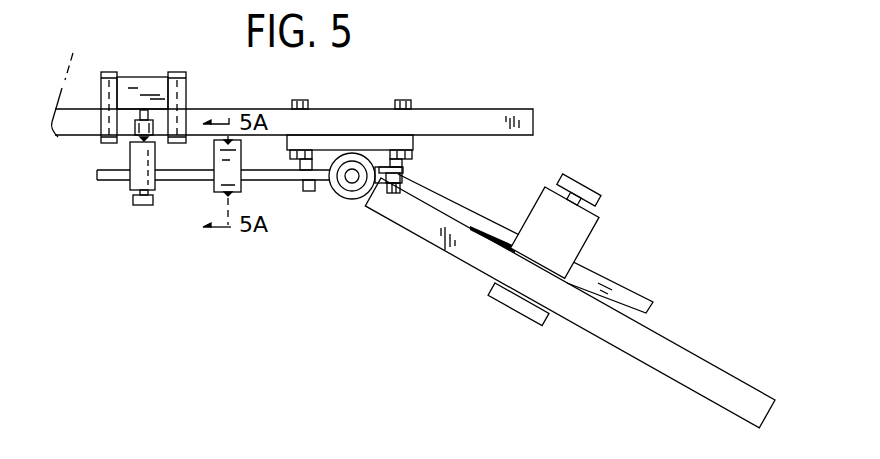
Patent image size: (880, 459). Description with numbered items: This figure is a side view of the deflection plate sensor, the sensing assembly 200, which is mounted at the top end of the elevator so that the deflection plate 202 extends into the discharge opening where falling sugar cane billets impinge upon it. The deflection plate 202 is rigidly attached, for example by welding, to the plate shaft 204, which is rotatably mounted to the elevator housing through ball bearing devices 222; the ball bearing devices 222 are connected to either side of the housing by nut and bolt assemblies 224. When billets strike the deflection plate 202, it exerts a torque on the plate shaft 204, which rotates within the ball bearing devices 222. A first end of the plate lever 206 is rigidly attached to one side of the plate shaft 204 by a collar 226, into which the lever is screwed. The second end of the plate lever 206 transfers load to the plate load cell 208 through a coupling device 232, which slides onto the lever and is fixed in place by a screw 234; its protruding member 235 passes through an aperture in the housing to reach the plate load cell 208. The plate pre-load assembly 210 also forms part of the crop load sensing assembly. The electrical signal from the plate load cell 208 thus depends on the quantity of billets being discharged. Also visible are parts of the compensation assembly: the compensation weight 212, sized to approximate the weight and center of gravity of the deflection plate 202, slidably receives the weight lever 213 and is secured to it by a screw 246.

The sensing assembly 200 is at (688, 105).
The deflection plate 202 is at (743, 382).
The plate shaft 204 is at (352, 180).
The plate lever 206 is at (173, 181).
The plate load cell 208 is at (133, 77).
The plate pre-load assembly 210 is at (247, 186).
The compensation weight 212 is at (596, 225).
The weight lever 213 is at (638, 292).
The ball bearing devices 222 is at (413, 141).
The nut and bolt assemblies 224 is at (300, 100).
The collar 226 is at (363, 203).
The coupling device 232 is at (130, 192).
The screw 234 is at (142, 207).
The protruding member 235 is at (132, 139).
The screw 246 is at (571, 174).